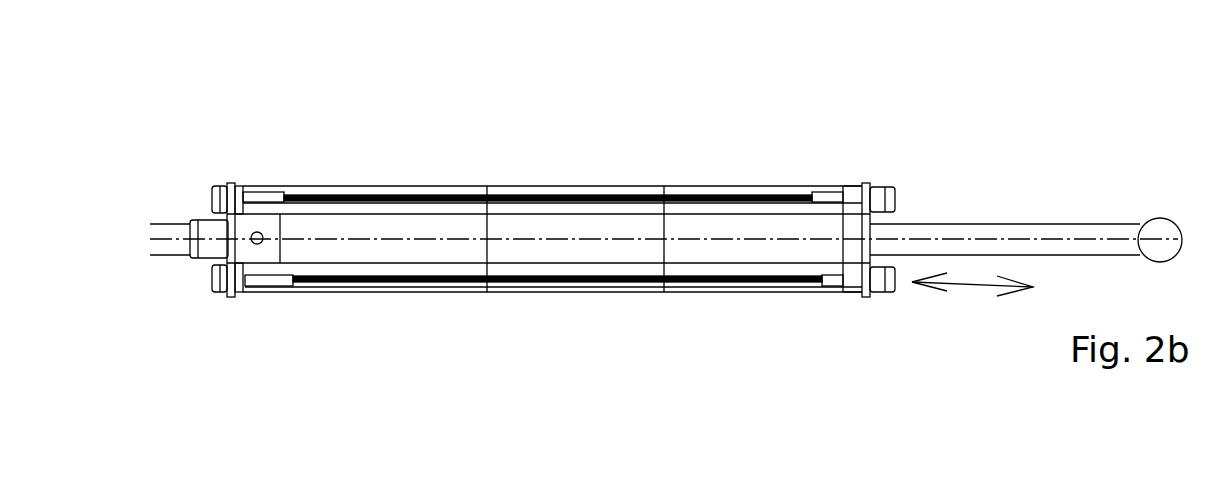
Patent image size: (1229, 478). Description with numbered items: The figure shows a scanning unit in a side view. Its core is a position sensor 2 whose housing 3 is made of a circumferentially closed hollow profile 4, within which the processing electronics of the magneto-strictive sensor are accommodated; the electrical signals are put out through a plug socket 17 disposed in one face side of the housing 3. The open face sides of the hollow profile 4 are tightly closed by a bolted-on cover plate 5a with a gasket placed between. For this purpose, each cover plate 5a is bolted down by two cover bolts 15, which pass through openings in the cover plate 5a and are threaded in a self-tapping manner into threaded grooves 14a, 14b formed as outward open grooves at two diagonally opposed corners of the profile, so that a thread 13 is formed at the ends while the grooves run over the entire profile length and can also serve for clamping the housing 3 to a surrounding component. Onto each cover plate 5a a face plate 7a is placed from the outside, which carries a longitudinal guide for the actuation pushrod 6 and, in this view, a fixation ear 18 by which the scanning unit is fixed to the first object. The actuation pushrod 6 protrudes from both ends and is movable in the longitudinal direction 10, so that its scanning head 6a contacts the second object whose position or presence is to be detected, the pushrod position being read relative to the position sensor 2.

The position sensor 2 is at (440, 185).
The housing 3 is at (664, 239).
The hollow profile 4 is at (664, 239).
The cover plate 5a is at (240, 270).
The actuation pushrod 6 is at (993, 224).
The scanning head 6a is at (1160, 218).
The face plate 7a is at (230, 290).
The longitudinal direction 10 is at (977, 287).
The thread 13 is at (563, 184).
The threaded groove 14a is at (615, 197).
The threaded groove 14b is at (675, 287).
The cover bolt 15 is at (237, 170).
The plug socket 17 is at (882, 161).
The fixation ear 18 is at (270, 227).